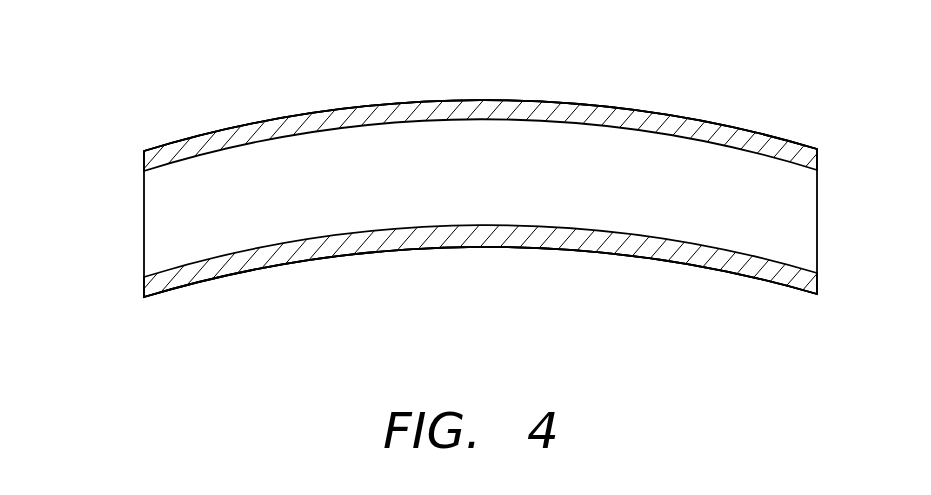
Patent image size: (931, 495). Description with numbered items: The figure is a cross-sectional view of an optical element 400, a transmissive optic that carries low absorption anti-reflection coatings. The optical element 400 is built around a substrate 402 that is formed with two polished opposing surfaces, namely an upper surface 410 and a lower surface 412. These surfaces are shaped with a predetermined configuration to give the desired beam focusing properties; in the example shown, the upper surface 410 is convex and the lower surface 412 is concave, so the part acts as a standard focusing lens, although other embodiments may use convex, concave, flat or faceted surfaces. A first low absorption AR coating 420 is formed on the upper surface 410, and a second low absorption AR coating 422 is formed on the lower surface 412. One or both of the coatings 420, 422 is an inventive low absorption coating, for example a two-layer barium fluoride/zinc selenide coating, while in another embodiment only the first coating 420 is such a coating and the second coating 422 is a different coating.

The optical element 400 is at (142, 220).
The substrate 402 is at (503, 184).
The upper surface 410 is at (357, 122).
The lower surface 412 is at (258, 252).
The first low absorption AR coating 420 is at (540, 98).
The second low absorption AR coating 422 is at (440, 245).